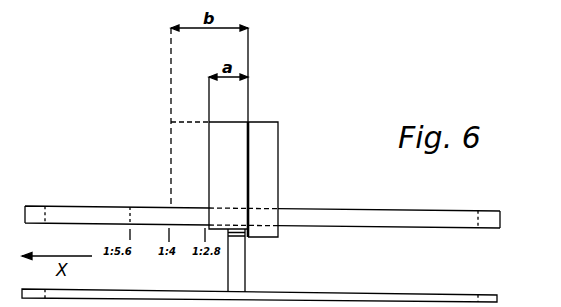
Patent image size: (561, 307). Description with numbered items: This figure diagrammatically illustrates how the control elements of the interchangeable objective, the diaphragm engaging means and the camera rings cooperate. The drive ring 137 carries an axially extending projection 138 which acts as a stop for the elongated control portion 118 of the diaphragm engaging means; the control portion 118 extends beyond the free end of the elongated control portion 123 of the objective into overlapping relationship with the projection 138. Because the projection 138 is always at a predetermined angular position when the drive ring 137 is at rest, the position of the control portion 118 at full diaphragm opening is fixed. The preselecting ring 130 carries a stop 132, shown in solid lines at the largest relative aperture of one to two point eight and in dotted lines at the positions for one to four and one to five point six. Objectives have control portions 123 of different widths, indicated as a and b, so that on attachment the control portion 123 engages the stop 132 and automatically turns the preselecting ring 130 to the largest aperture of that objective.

The elongated control portion 118 is at (266, 142).
The elongated control portion 123 is at (232, 172).
The preselecting ring 130 is at (85, 213).
The stop 132 is at (202, 218).
The drive ring 137 is at (448, 288).
The axially extending projection 138 is at (238, 235).